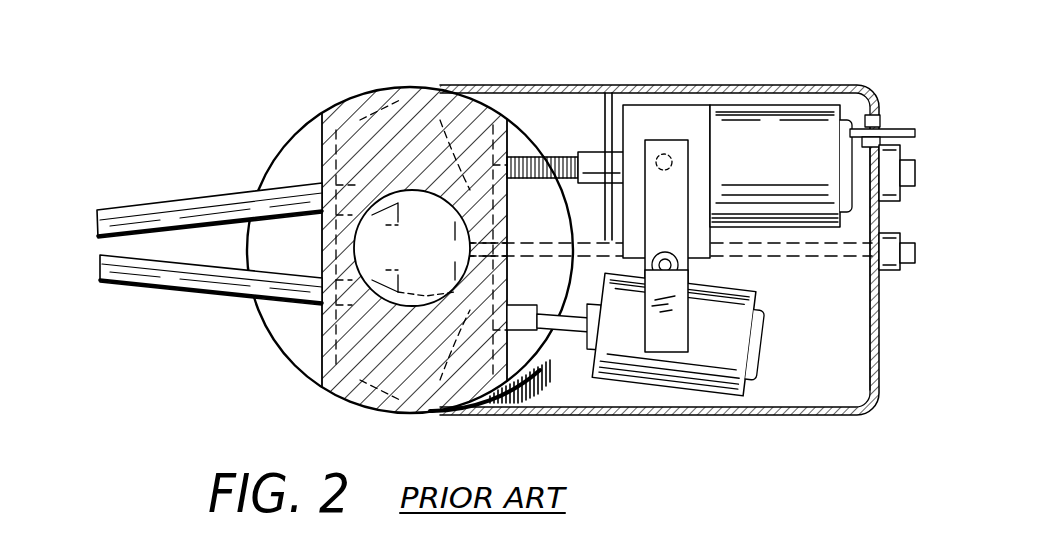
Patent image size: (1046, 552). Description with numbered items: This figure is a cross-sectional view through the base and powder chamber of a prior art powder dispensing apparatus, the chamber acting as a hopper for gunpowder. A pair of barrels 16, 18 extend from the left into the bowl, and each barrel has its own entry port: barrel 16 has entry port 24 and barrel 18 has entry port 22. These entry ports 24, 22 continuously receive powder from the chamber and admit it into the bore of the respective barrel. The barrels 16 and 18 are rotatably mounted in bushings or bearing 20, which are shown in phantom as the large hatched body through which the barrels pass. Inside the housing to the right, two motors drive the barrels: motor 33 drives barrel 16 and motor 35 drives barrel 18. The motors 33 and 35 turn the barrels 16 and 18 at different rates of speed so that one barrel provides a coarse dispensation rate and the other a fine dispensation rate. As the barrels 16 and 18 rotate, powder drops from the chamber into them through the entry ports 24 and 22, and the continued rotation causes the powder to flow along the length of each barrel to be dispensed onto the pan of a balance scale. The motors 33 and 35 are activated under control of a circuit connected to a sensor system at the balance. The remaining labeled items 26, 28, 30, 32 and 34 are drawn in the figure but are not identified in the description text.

The barrel 16 is at (165, 292).
The barrel 18 is at (195, 195).
The bushings or bearing 20 is at (400, 82).
The entry port 22 is at (400, 200).
The entry port 24 is at (402, 290).
The housing wall 26 is at (879, 340).
The housing 28 is at (680, 85).
The axis line 30 is at (815, 258).
The terminal 32 is at (902, 270).
The motor 33 is at (733, 356).
The terminal 34 is at (915, 175).
The motor 35 is at (785, 176).